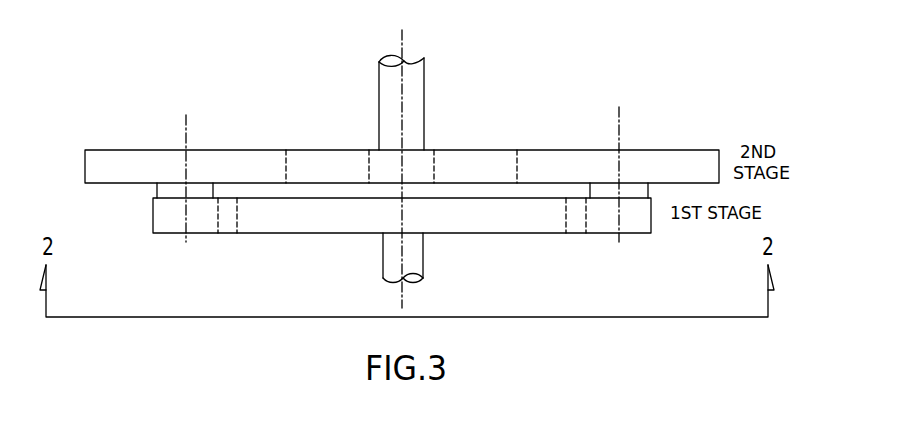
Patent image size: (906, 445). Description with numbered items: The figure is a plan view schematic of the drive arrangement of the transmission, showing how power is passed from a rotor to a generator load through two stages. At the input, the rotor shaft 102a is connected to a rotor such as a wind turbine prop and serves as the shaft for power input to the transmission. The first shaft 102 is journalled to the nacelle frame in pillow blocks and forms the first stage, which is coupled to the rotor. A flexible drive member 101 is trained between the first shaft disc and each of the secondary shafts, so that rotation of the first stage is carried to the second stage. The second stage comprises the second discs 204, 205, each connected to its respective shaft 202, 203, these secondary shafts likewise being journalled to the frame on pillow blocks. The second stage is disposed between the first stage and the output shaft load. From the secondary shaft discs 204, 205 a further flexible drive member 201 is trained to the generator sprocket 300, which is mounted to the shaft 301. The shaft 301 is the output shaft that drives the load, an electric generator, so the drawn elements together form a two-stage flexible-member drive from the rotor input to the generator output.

The flexible drive member 101 is at (577, 222).
The first shaft 102 is at (275, 225).
The rotor shaft 102a is at (390, 258).
The flexible drive member 201 is at (479, 168).
The shaft 202 is at (630, 190).
The shaft 203 is at (168, 215).
The second disc 204 is at (659, 165).
The second disc 205 is at (165, 165).
The generator sprocket 300 is at (429, 156).
The shaft 301 is at (410, 82).